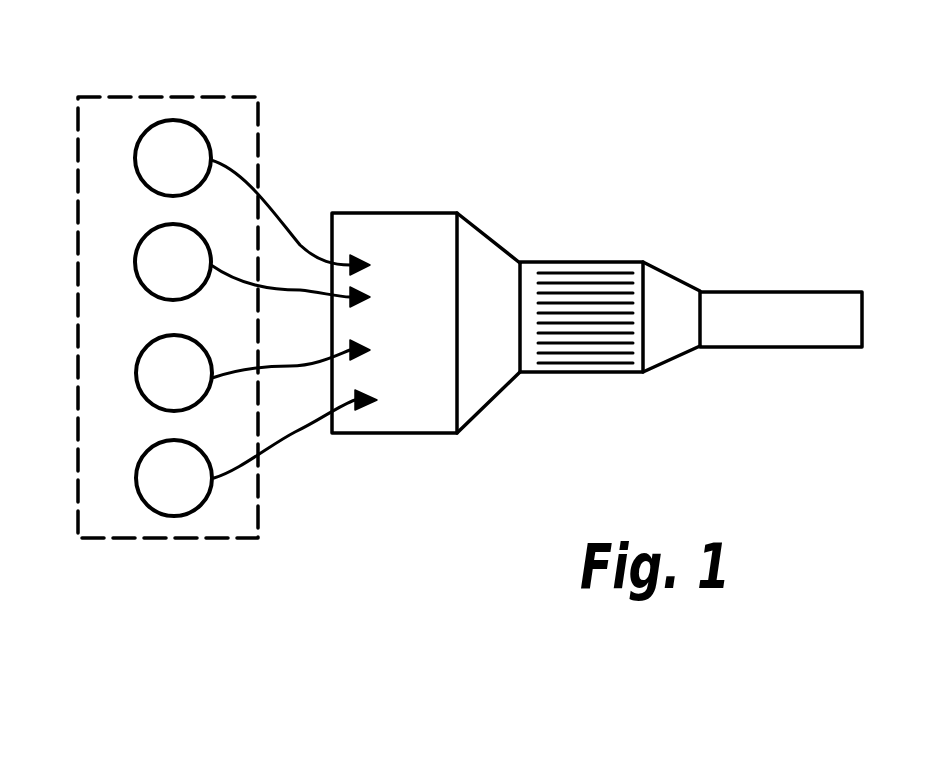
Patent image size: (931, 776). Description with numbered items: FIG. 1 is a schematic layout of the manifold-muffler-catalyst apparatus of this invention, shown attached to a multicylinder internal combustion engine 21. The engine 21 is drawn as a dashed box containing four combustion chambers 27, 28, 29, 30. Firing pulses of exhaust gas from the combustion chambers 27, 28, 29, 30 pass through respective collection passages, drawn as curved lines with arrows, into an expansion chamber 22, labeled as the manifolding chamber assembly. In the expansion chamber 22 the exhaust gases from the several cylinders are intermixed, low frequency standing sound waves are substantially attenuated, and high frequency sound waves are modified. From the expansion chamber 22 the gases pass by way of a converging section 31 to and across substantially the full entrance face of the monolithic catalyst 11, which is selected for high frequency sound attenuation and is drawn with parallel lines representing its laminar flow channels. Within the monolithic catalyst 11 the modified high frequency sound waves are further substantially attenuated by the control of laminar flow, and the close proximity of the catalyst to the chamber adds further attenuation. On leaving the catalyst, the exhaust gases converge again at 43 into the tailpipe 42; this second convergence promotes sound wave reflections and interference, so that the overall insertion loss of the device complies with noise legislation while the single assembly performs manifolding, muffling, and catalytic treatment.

The multicylinder internal combustion engine 21 is at (78, 488).
The expansion chamber 22 is at (444, 190).
The combustion chamber 27 is at (147, 497).
The combustion chamber 28 is at (150, 395).
The combustion chamber 29 is at (143, 250).
The combustion chamber 30 is at (148, 145).
The converging section 31 is at (488, 238).
The monolithic catalyst 11 is at (607, 262).
The converging section into tailpipe 43 is at (727, 242).
The tailpipe 42 is at (812, 292).